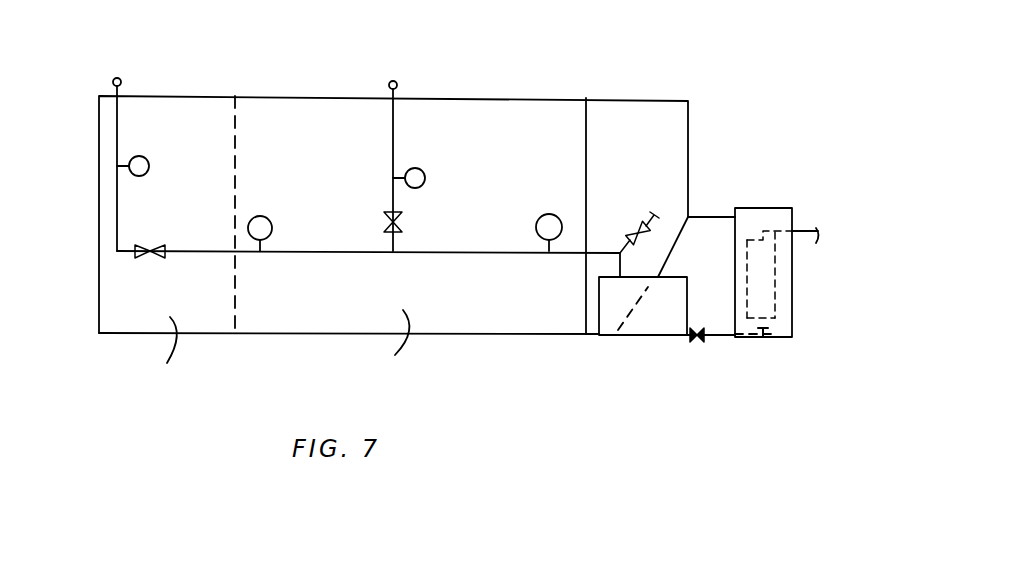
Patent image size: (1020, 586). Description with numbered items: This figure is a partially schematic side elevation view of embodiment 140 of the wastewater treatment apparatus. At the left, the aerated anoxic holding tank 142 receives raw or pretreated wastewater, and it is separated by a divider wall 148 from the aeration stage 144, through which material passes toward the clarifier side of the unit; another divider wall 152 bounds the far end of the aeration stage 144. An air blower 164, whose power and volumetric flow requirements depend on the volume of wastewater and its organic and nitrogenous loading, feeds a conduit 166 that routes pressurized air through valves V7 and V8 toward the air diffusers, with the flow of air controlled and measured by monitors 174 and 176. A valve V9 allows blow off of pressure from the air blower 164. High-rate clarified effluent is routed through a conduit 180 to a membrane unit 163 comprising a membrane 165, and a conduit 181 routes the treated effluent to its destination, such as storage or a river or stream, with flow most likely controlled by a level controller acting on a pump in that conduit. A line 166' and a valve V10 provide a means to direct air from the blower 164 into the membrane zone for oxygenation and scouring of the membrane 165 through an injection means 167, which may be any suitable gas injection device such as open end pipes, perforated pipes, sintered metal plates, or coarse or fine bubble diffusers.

The embodiment 140 is at (563, 51).
The aerated anoxic holding tank 142 is at (175, 355).
The aeration stage 144 is at (406, 346).
The divider wall 148 is at (235, 172).
The divider wall 152 is at (586, 164).
The membrane unit 163 is at (765, 208).
The air blower 164 is at (640, 337).
The membrane 165 is at (746, 288).
The conduit 166 is at (368, 273).
The line 166' is at (731, 361).
The injection means 167 is at (763, 338).
The monitor 174 is at (545, 215).
The monitor 176 is at (272, 229).
The conduit 180 is at (702, 217).
The conduit 181 is at (802, 230).
The valve V7 is at (404, 224).
The valve V8 is at (157, 243).
The valve V9 is at (643, 232).
The valve V10 is at (697, 343).